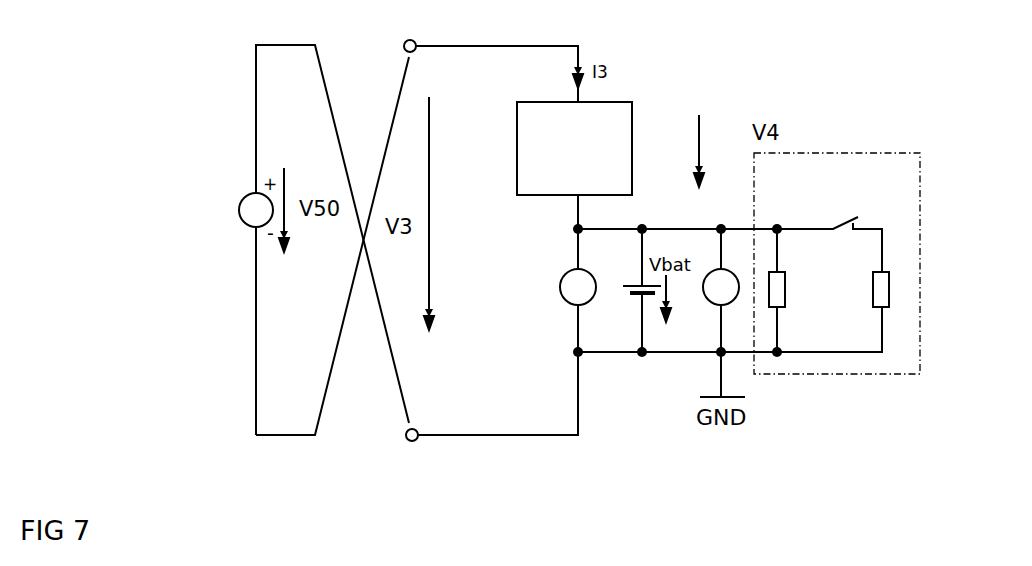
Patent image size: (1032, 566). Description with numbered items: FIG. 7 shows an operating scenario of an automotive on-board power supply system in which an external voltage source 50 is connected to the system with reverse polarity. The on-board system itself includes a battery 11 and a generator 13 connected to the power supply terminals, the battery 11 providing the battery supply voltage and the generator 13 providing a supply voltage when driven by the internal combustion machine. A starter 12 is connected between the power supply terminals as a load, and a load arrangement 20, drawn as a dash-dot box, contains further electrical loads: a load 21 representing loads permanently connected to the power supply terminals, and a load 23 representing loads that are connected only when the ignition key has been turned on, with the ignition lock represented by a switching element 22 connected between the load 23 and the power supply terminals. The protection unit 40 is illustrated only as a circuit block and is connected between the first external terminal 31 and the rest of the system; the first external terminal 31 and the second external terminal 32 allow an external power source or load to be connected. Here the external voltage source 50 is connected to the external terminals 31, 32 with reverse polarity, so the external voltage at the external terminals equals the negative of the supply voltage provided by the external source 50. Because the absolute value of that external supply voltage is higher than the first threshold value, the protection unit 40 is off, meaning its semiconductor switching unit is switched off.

The external voltage source 50 is at (245, 197).
The first external terminal 31 is at (407, 40).
The second external terminal 32 is at (414, 442).
The protection unit 40 is at (632, 128).
The starter 12 is at (566, 276).
The battery 11 is at (628, 281).
The generator 13 is at (710, 274).
The load arrangement 20 is at (835, 152).
The load 21 is at (786, 290).
The switching element 22 is at (843, 220).
The load 23 is at (873, 282).